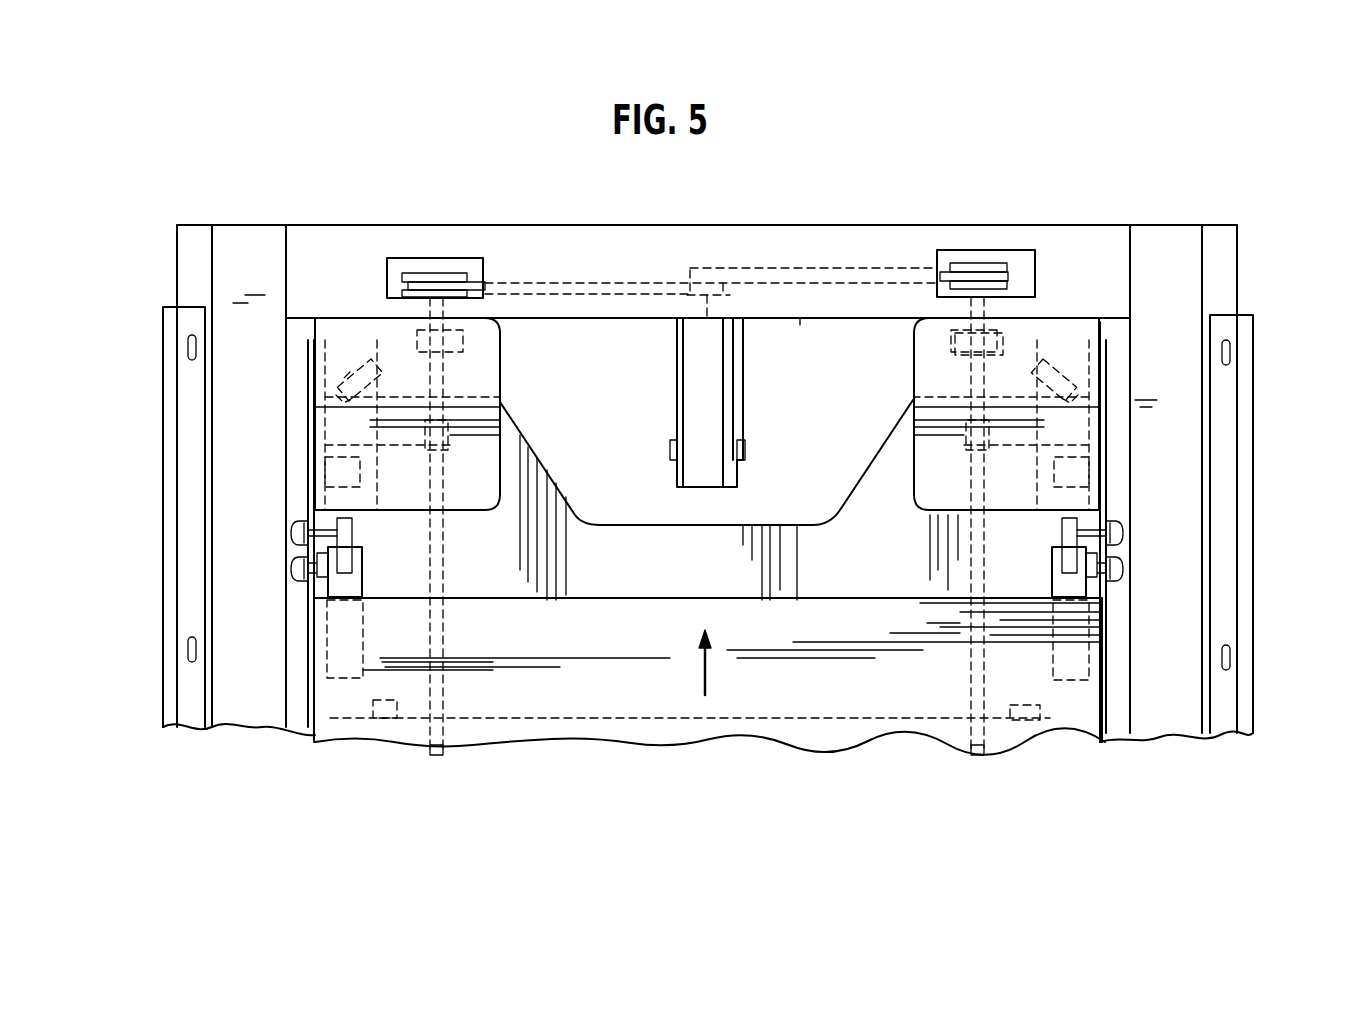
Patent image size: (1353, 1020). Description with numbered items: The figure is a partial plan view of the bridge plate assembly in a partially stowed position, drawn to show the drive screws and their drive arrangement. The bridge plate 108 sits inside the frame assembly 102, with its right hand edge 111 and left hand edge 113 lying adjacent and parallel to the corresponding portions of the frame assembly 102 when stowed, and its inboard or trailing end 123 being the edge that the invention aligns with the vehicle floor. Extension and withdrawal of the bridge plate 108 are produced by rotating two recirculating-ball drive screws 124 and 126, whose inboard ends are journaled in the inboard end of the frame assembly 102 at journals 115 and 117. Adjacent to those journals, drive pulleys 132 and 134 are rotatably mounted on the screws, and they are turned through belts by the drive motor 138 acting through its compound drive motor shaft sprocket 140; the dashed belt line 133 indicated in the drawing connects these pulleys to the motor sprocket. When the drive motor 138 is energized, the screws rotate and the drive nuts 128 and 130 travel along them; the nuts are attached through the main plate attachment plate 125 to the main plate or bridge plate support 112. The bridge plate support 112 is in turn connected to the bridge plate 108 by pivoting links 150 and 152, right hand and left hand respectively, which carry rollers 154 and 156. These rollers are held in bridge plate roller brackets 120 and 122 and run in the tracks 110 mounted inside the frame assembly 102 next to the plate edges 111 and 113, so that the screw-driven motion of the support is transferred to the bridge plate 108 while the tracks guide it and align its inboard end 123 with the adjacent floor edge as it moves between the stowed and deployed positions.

The frame assembly 102 is at (258, 481).
The bridge plate 108 is at (585, 636).
The track 110 is at (297, 380).
The bridge plate right hand edge 111 is at (1100, 709).
The bridge plate support 112 is at (665, 566).
The bridge plate left hand edge 113 is at (307, 670).
The drive screw journal 115 is at (460, 313).
The drive screw journal 117 is at (1000, 327).
The bridge plate roller bracket 120 is at (1073, 537).
The bridge plate roller bracket 122 is at (293, 530).
The bridge plate inboard end 123 is at (800, 318).
The drive screw 124 is at (443, 687).
The main plate attachment plate 125 is at (382, 351).
The drive screw 126 is at (963, 690).
The drive nut 128 is at (1100, 447).
The drive nut 130 is at (320, 437).
The drive pulley 132 is at (1000, 278).
The link line 133 is at (548, 283).
The drive pulley 134 is at (400, 278).
The drive motor 138 is at (735, 347).
The compound drive motor shaft sprocket 140 is at (690, 268).
The pivoting link 150 is at (1090, 662).
The pivoting link 152 is at (323, 630).
The roller 154 is at (1113, 583).
The roller 156 is at (297, 553).